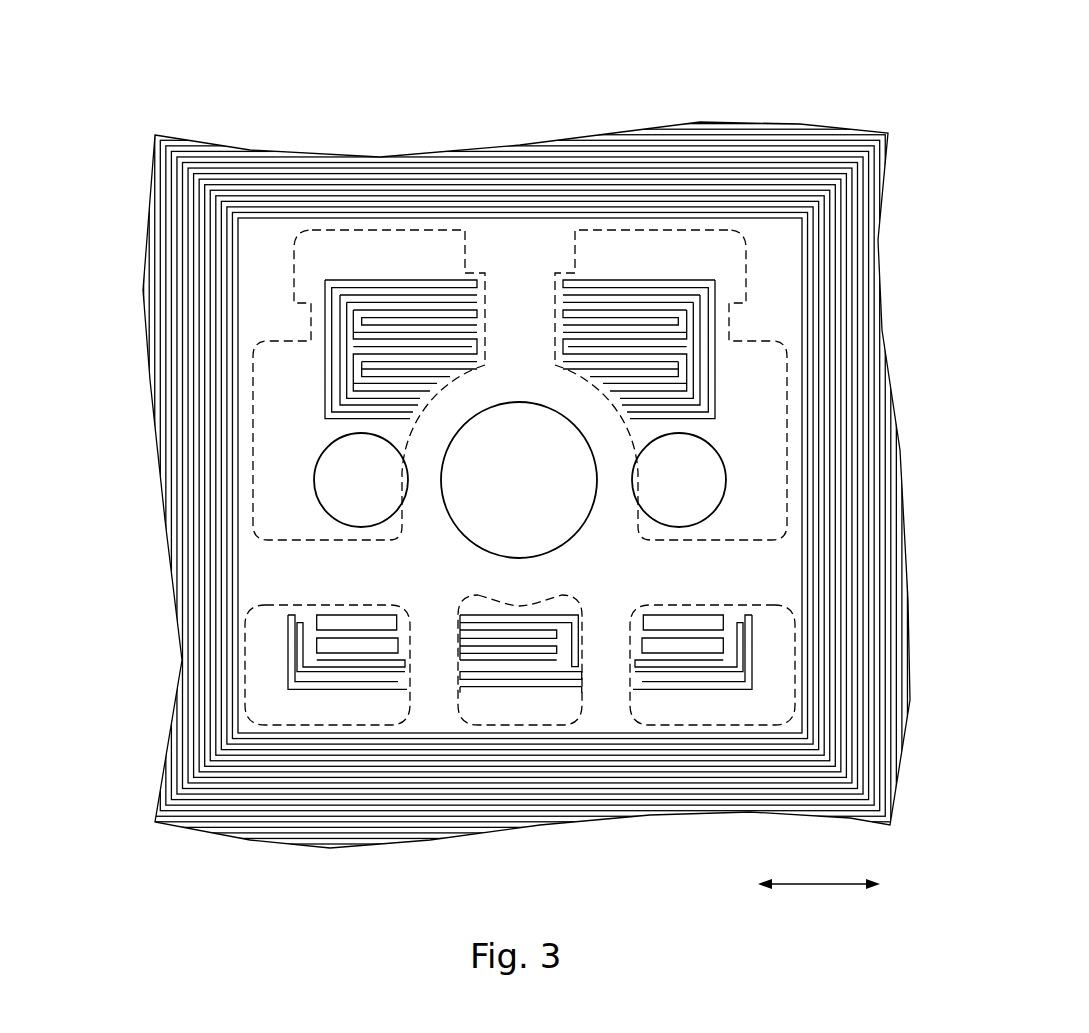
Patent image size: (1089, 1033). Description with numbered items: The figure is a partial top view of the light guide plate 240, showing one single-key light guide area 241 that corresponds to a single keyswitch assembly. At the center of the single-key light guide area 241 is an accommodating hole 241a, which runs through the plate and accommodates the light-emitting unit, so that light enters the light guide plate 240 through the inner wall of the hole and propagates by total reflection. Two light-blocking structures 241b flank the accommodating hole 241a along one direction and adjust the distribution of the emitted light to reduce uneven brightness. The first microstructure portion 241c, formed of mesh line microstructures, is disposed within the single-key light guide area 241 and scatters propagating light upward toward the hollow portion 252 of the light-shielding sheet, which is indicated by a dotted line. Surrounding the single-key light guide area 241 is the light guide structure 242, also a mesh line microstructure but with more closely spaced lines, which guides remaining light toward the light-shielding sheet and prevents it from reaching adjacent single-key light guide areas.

The light guide plate 240 is at (1052, 84).
The single-key light guide area 241 is at (777, 218).
The accommodating hole 241a is at (460, 543).
The light-blocking structures 241b is at (316, 450).
The first microstructure portion 241c is at (404, 280).
The light guide structure 242 is at (150, 292).
The hollow portion 252 is at (250, 487).